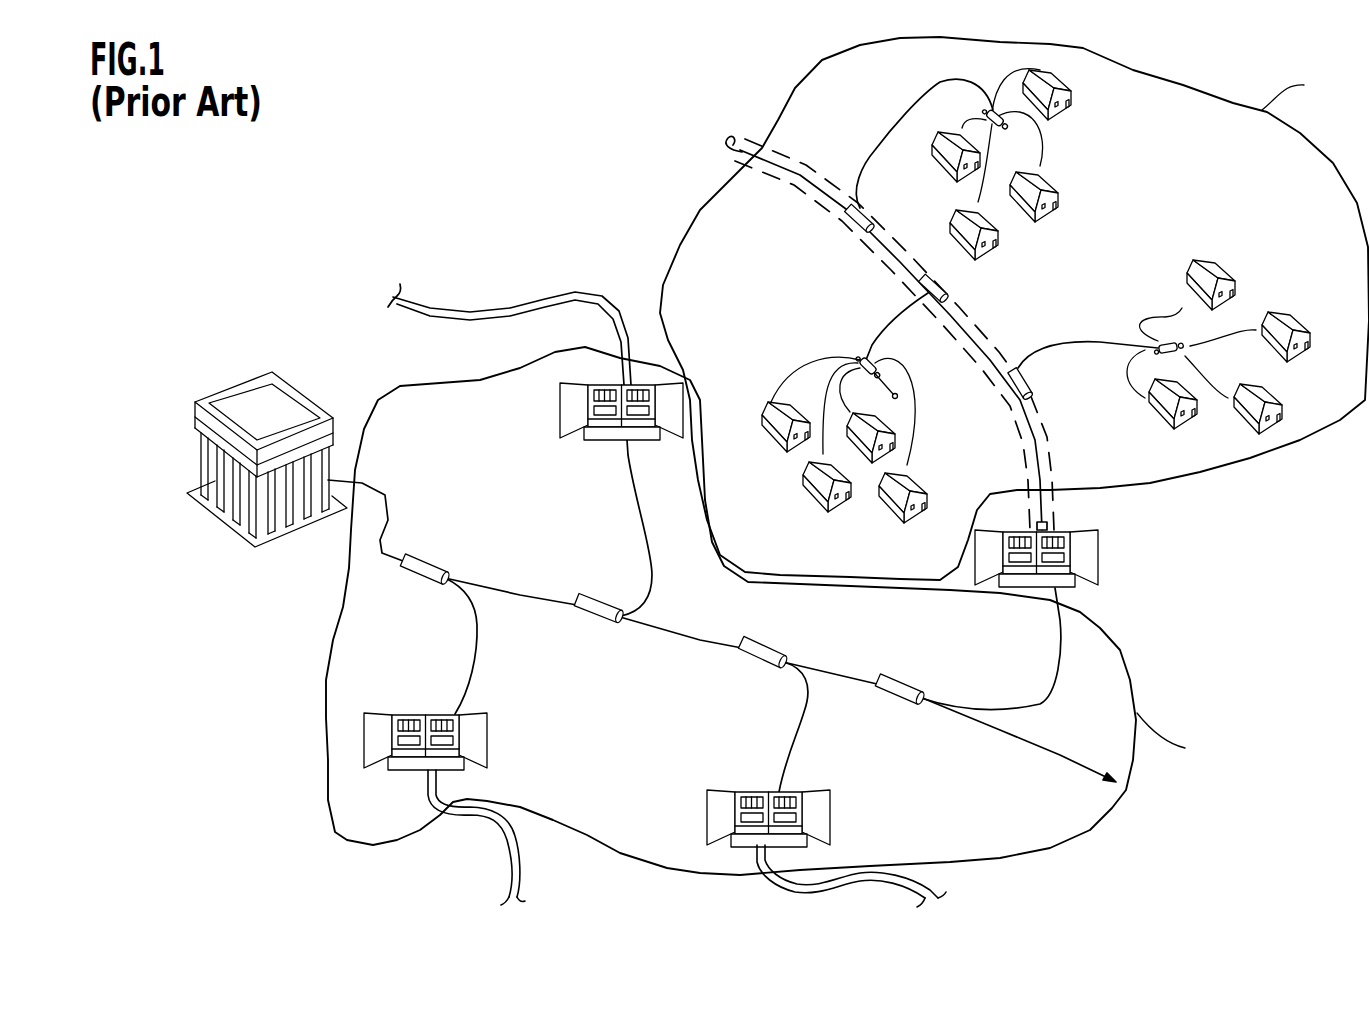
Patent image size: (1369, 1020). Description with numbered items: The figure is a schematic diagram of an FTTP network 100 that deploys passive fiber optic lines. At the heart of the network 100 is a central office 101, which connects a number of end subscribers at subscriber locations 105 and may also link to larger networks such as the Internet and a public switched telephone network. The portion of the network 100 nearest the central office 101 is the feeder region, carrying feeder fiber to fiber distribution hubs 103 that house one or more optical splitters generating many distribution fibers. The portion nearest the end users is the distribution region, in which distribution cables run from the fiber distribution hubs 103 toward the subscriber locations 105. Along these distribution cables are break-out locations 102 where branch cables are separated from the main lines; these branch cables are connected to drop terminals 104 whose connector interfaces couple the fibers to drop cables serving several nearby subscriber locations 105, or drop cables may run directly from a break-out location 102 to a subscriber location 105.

The FTTP network 100 is at (364, 238).
The central office 101 is at (196, 455).
The break-out location 102 is at (432, 560).
The fiber distribution hub 103 is at (680, 438).
The drop terminal 104 is at (866, 360).
The subscriber location 105 is at (1047, 182).